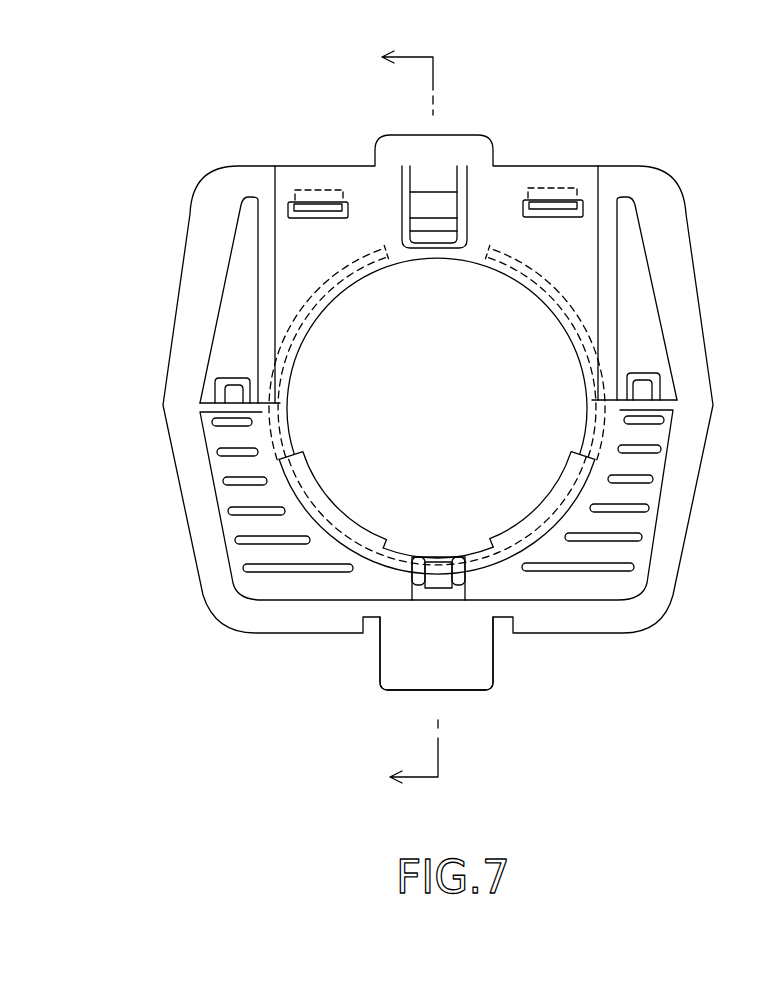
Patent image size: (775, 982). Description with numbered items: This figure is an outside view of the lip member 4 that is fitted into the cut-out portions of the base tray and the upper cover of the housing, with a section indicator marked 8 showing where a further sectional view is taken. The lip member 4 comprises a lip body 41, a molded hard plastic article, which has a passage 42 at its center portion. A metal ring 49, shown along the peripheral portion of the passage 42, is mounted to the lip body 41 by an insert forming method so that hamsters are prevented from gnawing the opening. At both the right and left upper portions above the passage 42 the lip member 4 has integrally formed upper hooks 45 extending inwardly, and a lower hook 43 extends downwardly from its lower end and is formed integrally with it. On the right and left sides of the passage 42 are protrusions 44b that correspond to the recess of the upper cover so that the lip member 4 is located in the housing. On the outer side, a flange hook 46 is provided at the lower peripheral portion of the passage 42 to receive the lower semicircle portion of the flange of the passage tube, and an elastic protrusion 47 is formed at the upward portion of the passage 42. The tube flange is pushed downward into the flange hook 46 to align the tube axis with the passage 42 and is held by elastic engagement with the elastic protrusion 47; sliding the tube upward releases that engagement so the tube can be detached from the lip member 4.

The lip member 4 is at (460, 371).
The lip body 41 is at (651, 148).
The passage 42 is at (455, 419).
The lower hook 43 is at (493, 660).
The protrusion 44b is at (233, 396).
The upper hooks 45 is at (317, 208).
The flange hook 46 is at (408, 557).
The elastic protrusion 47 is at (443, 208).
The metal ring 49 is at (527, 267).
The section line FIG. 8 is at (433, 416).